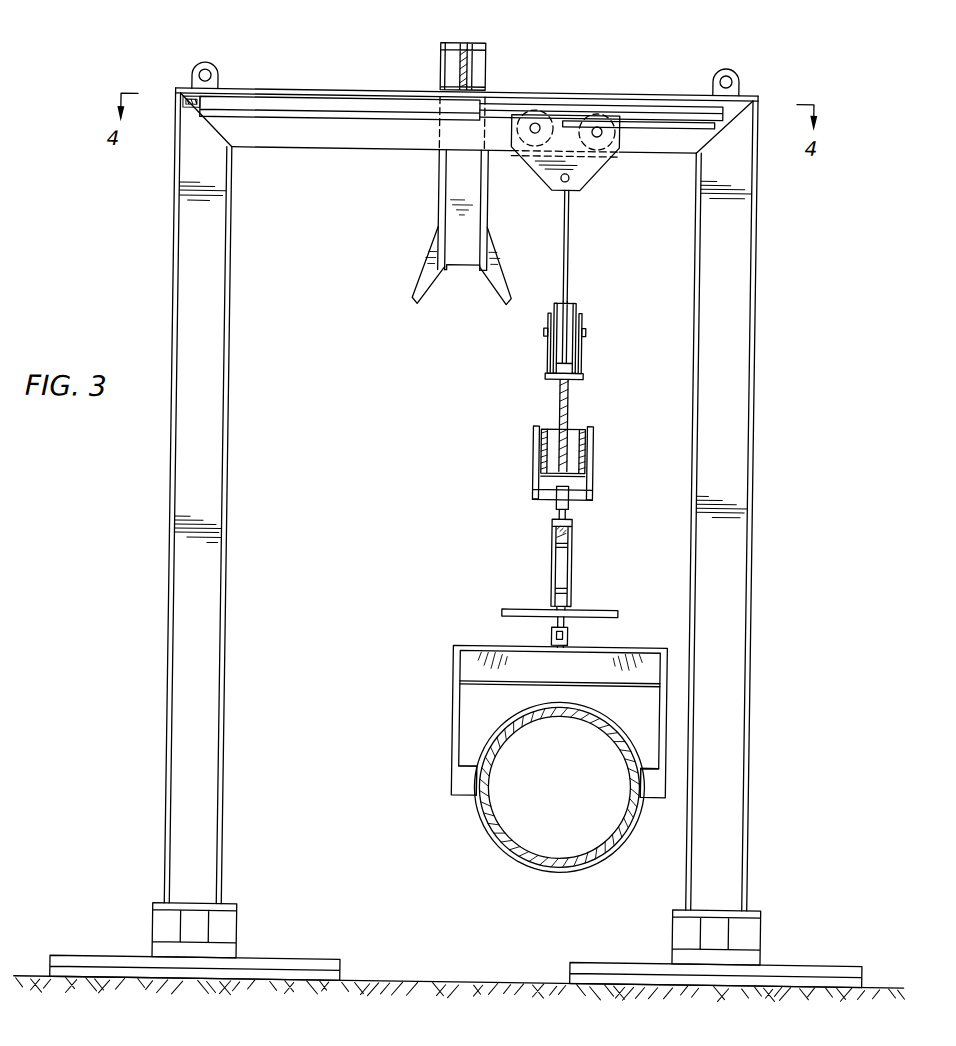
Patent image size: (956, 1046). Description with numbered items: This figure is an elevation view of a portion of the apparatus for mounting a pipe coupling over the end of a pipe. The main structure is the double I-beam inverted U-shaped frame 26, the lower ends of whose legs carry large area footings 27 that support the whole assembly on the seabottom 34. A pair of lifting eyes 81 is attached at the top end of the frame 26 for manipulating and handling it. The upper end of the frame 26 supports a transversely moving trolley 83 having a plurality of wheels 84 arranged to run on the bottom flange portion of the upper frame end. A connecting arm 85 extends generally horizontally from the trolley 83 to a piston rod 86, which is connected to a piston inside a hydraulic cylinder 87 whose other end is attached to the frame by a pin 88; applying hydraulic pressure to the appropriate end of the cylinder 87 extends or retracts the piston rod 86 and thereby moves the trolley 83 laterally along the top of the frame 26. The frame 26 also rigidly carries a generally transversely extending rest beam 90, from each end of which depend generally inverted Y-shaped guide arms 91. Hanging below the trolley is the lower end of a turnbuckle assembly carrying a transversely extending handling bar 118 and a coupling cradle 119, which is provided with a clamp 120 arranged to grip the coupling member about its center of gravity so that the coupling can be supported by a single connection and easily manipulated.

The inverted U-shaped frame 26 is at (738, 366).
The footing 27 is at (276, 958).
The seabottom 34 is at (476, 978).
The lifting eyes 81 is at (198, 66).
The trolley 83 is at (590, 163).
The wheels 84 is at (534, 109).
The connecting arm 85 is at (684, 122).
The piston rod 86 is at (654, 102).
The hydraulic cylinder 87 is at (344, 107).
The pin 88 is at (186, 114).
The rest beam 90 is at (455, 42).
The guide arms 91 is at (436, 210).
The handling bar 118 is at (521, 609).
The coupling cradle 119 is at (458, 715).
The clamp 120 is at (487, 835).